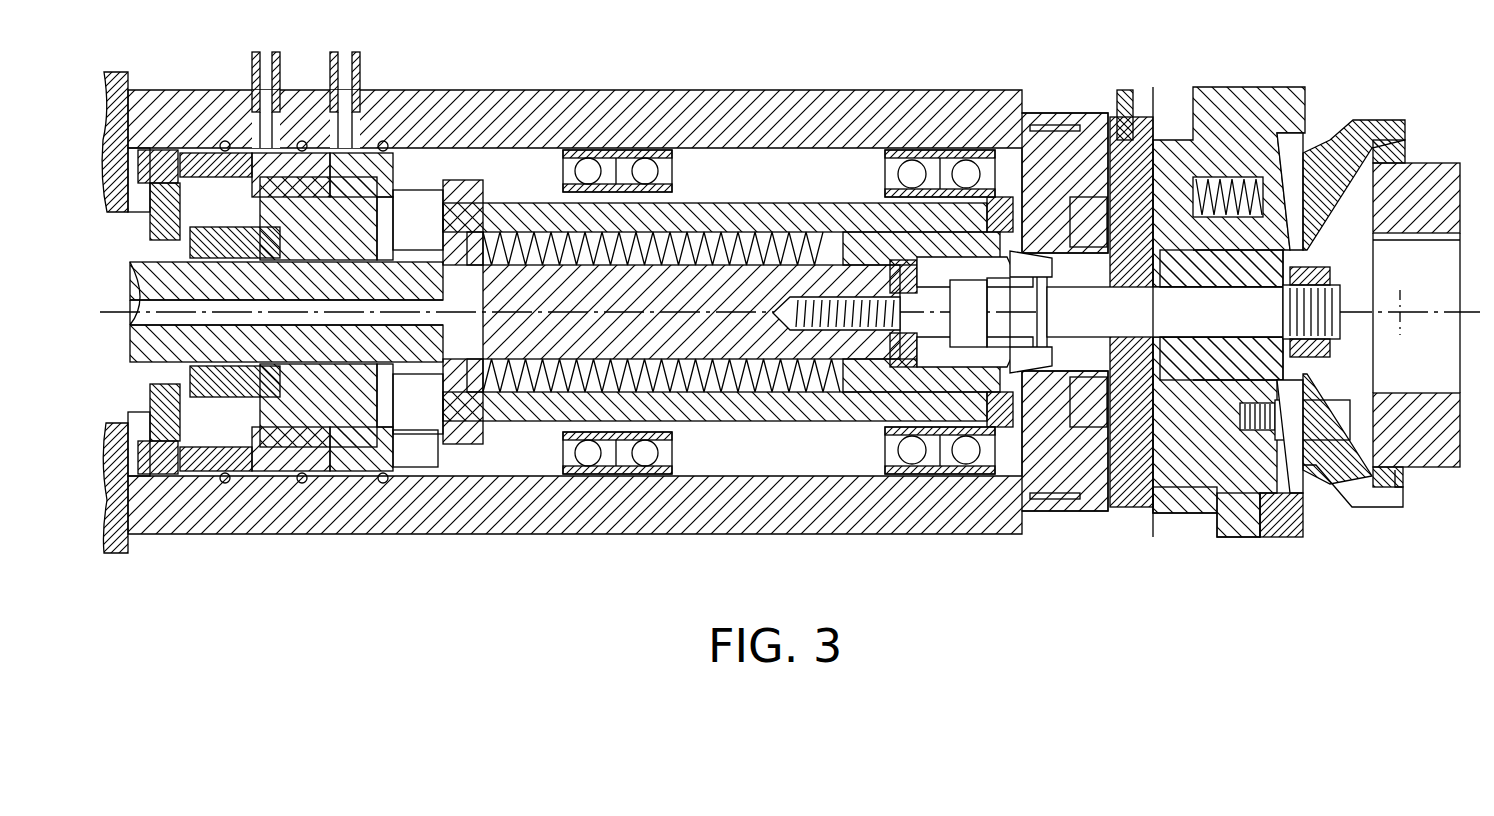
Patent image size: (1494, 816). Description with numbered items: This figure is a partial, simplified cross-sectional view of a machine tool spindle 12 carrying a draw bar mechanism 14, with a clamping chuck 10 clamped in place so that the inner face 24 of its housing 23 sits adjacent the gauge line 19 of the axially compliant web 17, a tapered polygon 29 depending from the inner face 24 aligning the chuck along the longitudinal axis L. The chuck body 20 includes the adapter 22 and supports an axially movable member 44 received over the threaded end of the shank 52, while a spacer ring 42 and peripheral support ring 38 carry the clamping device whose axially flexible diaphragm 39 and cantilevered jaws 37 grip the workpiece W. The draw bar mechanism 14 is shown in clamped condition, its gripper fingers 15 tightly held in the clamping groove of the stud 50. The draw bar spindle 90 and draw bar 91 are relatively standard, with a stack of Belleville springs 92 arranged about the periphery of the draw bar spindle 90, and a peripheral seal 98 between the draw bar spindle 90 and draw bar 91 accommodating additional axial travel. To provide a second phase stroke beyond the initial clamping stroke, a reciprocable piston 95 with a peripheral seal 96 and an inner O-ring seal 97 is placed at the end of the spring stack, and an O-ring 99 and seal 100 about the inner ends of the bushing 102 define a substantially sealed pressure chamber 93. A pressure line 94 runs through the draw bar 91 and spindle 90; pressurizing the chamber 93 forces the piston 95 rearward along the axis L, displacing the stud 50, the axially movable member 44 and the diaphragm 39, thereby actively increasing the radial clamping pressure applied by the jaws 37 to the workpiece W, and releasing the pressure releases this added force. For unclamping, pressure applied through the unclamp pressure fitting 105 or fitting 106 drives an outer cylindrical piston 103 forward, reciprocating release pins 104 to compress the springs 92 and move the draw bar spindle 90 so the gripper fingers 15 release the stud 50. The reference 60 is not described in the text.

The clamping chuck 10 is at (1355, 98).
The machine tool spindle 12 is at (952, 48).
The draw bar mechanism 14 is at (117, 370).
The gripper fingers 15 is at (1052, 357).
The web 17 is at (1092, 410).
The gauge line 19 is at (1134, 106).
The chuck body 20 is at (1210, 62).
The adapter 22 is at (1180, 552).
The housing 23 is at (1173, 518).
The inner face 24 is at (1082, 112).
The tapered polygon 29 is at (1112, 280).
The cantilevered jaws 37 is at (1378, 498).
The peripheral support ring 38 is at (1275, 540).
The diaphragm 39 is at (1330, 205).
The spacer ring 42 is at (1248, 540).
The axially movable member 44 is at (1345, 355).
The stud 50 is at (1047, 300).
The shank 52 is at (1208, 315).
The draw nut 60 is at (1215, 338).
The draw bar spindle 90 is at (500, 328).
The draw bar 91 is at (112, 298).
The Belleville springs 92 is at (715, 325).
The pressure chamber 93 is at (680, 430).
The pressure line 94 is at (228, 298).
The piston 95 is at (455, 424).
The peripheral seal 96 is at (505, 444).
The O-ring seal 97 is at (493, 268).
The peripheral seal 98 is at (375, 290).
The O-ring 99 is at (872, 436).
The seal 100 is at (862, 352).
The bushing 102 is at (880, 183).
The outer cylindrical piston 103 is at (393, 178).
The release pins 104 is at (377, 348).
The unclamp pressure fitting 105 is at (360, 78).
The unclamp pressure fitting 106 is at (252, 78).
The workpiece W is at (1418, 168).
The longitudinal axis L is at (1404, 298).